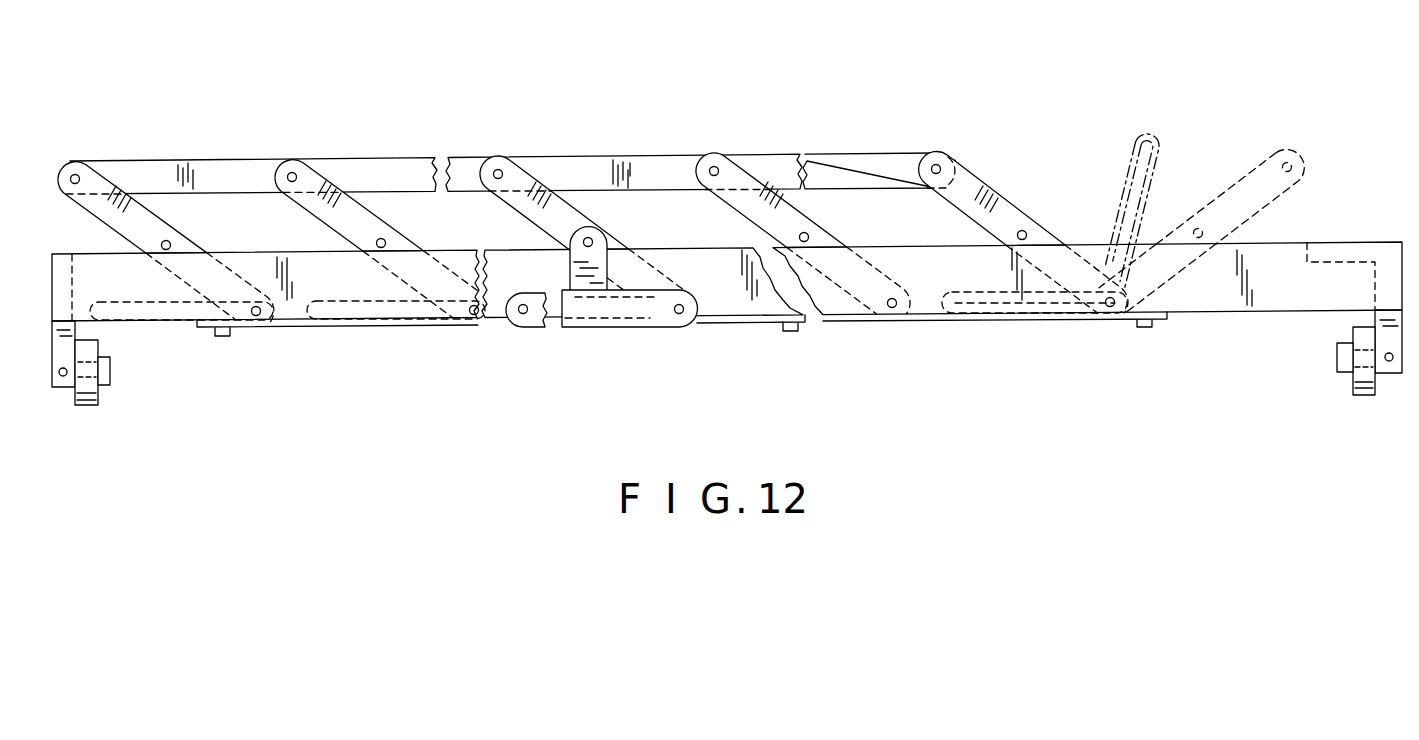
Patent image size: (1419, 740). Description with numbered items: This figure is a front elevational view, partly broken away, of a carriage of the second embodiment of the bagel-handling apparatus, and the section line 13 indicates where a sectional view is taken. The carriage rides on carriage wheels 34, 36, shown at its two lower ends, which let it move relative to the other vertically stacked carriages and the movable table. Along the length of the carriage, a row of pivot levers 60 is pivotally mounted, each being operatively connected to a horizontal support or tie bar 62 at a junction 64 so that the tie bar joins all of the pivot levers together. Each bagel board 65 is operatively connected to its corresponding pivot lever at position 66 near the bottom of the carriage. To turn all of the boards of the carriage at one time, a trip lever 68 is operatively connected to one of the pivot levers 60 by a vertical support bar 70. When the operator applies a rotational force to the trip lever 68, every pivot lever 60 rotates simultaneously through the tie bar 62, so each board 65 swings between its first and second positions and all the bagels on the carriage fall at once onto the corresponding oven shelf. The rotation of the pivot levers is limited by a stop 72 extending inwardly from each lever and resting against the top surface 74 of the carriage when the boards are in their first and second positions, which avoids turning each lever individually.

The section line 13- 13 is at (914, 98).
The carriage wheel 34 is at (100, 396).
The carriage wheel 36 is at (1357, 392).
The pivot lever 60 is at (518, 180).
The tie bar 62 is at (397, 172).
The junction 64 is at (289, 173).
The bagel board 65 is at (395, 318).
The position 66 is at (474, 318).
The trip lever 68 is at (583, 313).
The vertical support bar 70 is at (606, 256).
The stop 72 is at (386, 242).
The top surface 74 is at (307, 252).